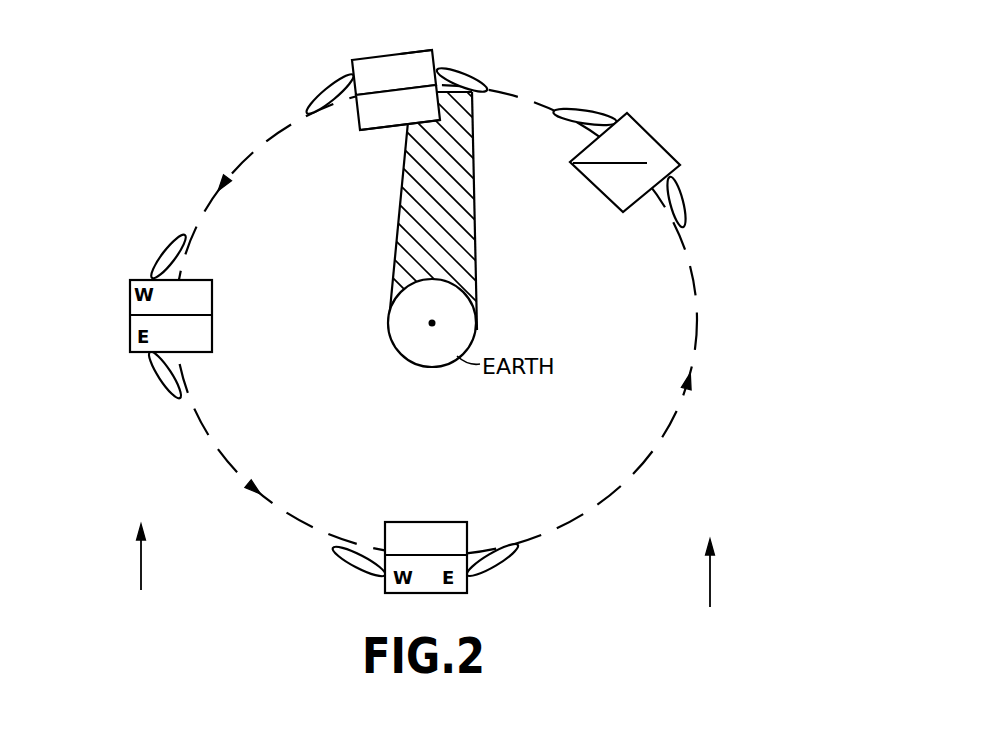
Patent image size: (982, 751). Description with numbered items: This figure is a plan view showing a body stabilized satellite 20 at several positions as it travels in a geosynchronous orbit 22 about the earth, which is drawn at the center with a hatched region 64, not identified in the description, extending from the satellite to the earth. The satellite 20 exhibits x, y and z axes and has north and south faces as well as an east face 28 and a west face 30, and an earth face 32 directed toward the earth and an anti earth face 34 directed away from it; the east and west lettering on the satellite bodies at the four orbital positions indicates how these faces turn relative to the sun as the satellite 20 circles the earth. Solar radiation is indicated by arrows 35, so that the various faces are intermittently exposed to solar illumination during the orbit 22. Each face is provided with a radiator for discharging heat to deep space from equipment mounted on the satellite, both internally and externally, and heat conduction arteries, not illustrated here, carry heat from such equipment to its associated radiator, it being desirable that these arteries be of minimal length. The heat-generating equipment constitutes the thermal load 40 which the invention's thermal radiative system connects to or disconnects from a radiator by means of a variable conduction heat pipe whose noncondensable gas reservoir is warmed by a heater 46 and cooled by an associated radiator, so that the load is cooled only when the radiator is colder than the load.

The body stabilized satellite 20 is at (676, 132).
The geosynchronous orbit 22 is at (692, 302).
The east face 28 is at (355, 117).
The west face 30 is at (472, 107).
The earth face 32 is at (380, 129).
The anti earth face 34 is at (387, 56).
The arrows indicating solar radiation 35 is at (140, 568).
The thermal load 40 is at (352, 72).
The heater 46 is at (430, 53).
The earth coverage beam 64 is at (477, 250).